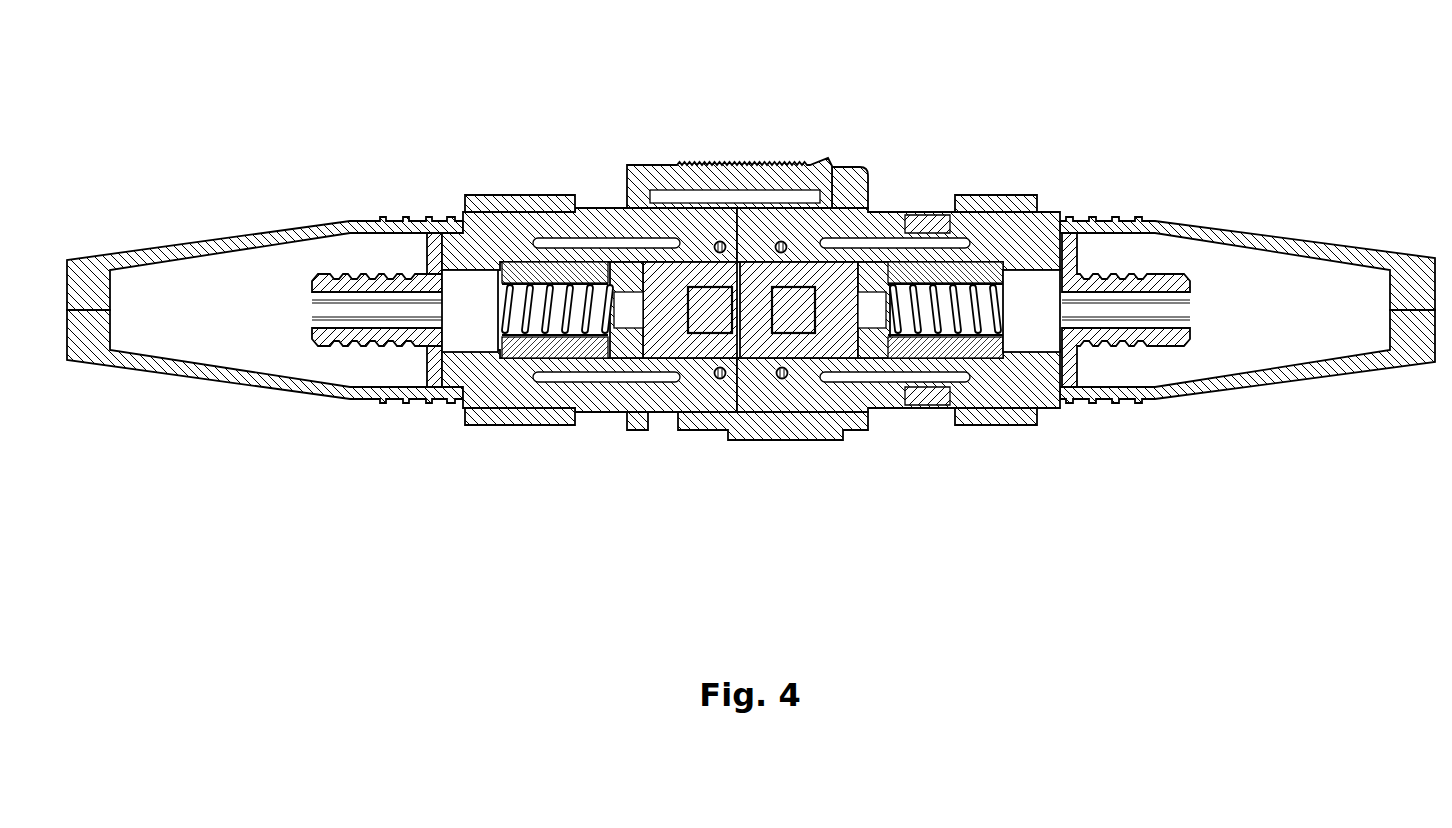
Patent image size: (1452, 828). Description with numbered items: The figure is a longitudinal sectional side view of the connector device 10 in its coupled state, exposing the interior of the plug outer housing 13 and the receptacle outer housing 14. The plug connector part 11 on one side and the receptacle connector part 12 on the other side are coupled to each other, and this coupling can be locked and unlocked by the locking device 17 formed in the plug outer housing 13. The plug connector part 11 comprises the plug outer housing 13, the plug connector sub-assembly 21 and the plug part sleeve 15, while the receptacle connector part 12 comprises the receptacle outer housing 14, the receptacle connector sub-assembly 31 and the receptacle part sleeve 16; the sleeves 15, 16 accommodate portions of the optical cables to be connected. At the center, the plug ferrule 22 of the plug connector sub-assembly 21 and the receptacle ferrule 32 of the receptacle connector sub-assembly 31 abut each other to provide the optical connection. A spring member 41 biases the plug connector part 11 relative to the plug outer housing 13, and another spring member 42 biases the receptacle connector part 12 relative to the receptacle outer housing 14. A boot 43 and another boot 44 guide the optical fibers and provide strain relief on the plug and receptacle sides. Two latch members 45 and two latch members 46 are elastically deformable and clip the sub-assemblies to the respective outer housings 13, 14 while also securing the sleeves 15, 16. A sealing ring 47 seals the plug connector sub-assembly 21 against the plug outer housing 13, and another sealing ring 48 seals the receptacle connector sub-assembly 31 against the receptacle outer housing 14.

The connector device 10 is at (148, 70).
The plug connector part 11 is at (845, 170).
The receptacle connector part 12 is at (600, 222).
The plug outer housing 13 is at (870, 412).
The receptacle outer housing 14 is at (612, 412).
The plug part sleeve 15 is at (1292, 243).
The receptacle part sleeve 16 is at (170, 243).
The locking device 17 is at (768, 165).
The plug connector sub-assembly 21 is at (985, 265).
The plug ferrule 22 is at (772, 345).
The receptacle connector sub-assembly 31 is at (565, 283).
The receptacle ferrule 32 is at (685, 345).
The spring member 41 is at (967, 340).
The spring member 42 is at (537, 332).
The boot 43 is at (1150, 352).
The boot 44 is at (310, 320).
The latch members 45 is at (912, 213).
The latch members 46 is at (498, 213).
The sealing ring 47 is at (790, 385).
The sealing ring 48 is at (718, 385).